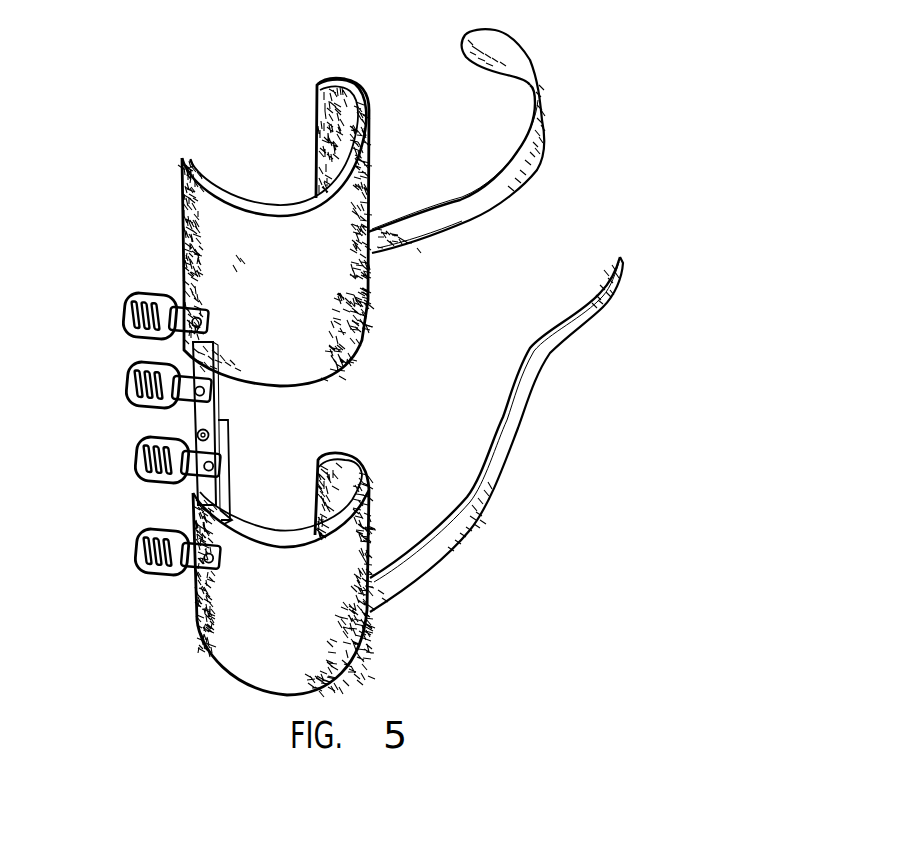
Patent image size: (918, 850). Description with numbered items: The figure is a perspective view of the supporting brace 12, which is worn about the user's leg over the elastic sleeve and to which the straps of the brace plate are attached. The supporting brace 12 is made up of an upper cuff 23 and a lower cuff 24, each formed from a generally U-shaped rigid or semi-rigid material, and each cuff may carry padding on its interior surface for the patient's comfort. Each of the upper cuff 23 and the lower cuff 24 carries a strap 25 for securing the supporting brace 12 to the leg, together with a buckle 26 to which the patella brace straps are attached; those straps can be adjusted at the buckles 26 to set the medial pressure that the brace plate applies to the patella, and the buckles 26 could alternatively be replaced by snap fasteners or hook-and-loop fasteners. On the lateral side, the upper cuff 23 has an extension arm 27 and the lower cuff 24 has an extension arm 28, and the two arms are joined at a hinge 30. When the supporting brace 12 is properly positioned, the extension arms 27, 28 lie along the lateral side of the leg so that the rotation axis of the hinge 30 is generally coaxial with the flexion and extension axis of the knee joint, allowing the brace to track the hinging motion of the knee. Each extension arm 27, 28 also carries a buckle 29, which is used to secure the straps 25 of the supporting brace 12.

The supporting brace 12 is at (153, 110).
The upper cuff 23 is at (323, 284).
The lower cuff 24 is at (318, 621).
The strap 25 is at (489, 183).
The buckle 26 is at (137, 288).
The extension arm 27 is at (218, 383).
The extension arm 28 is at (216, 486).
The buckle 29 is at (130, 380).
The hinge 30 is at (210, 436).